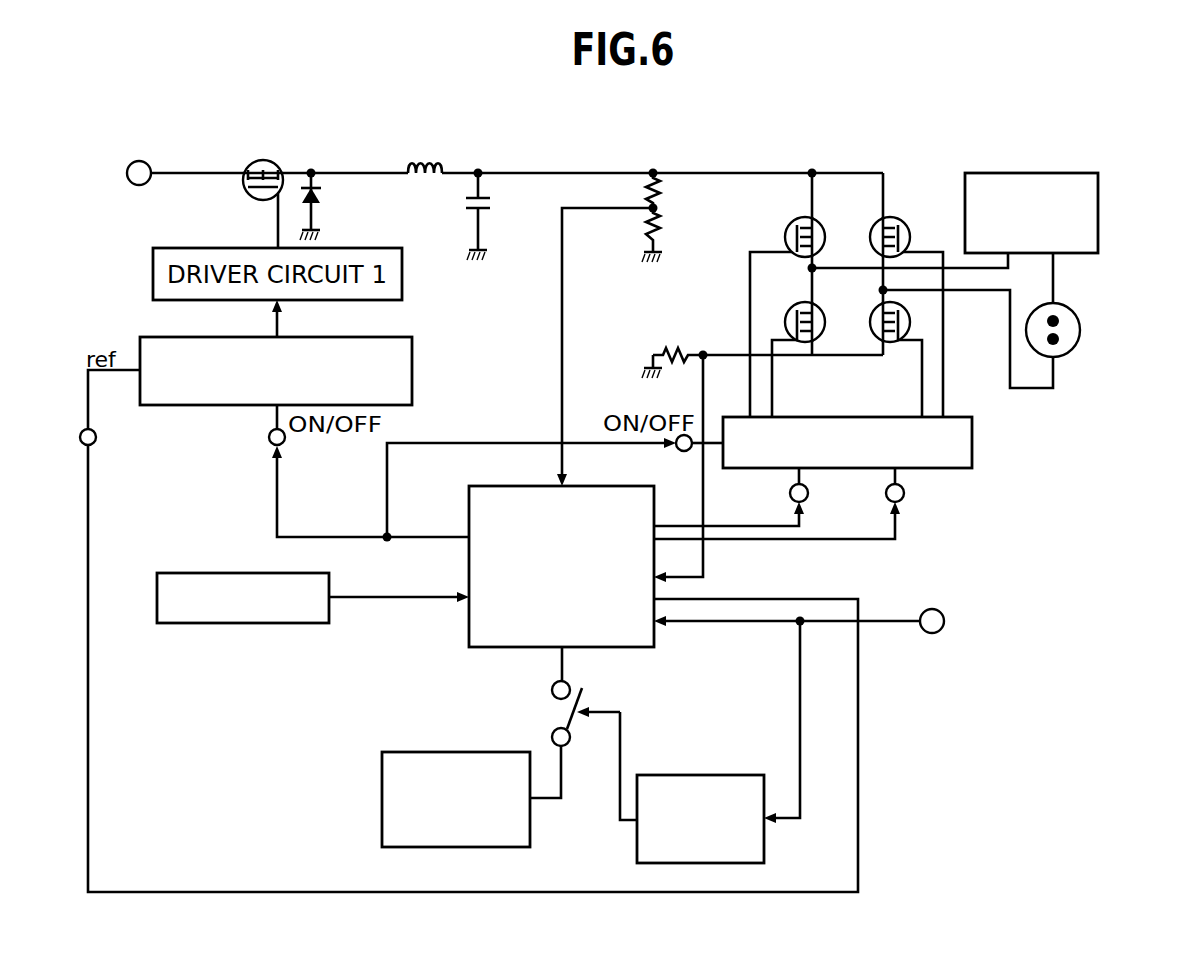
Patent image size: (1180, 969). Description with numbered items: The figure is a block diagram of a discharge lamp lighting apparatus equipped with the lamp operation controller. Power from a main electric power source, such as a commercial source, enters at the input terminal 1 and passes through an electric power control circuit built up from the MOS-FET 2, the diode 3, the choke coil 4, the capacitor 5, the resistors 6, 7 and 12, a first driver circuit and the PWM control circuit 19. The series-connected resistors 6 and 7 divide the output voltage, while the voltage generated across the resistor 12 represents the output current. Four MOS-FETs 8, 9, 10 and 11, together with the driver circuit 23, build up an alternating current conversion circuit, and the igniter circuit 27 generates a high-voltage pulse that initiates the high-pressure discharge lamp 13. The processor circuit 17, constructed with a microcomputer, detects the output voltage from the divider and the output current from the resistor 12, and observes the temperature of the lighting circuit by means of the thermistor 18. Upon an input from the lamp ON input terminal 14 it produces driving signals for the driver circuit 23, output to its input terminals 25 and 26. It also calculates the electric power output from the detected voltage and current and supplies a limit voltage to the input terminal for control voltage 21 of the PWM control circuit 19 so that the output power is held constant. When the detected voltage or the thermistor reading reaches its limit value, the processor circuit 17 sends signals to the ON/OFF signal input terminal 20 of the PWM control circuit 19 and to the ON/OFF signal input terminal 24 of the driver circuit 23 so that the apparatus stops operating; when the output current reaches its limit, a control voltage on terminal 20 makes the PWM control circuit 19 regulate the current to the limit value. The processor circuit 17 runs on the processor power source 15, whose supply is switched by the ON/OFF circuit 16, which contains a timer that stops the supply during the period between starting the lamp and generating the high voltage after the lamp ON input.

The input terminal 1 is at (147, 163).
The MOS-FET 2 is at (272, 163).
The diode 3 is at (321, 189).
The choke coil 4 is at (440, 163).
The capacitor 5 is at (470, 200).
The resistor 6 is at (660, 185).
The resistor 7 is at (660, 228).
The MOS-FET 8 is at (790, 226).
The MOS-FET 9 is at (790, 311).
The MOS-FET 10 is at (905, 224).
The MOS-FET 11 is at (874, 312).
The resistor 12 is at (663, 351).
The discharge lamp 13 is at (1075, 309).
The lamp ON input terminal 14 is at (940, 610).
The power source for processor circuit 15 is at (398, 752).
The ON/OFF circuit 16 is at (717, 775).
The processor circuit 17 is at (503, 647).
The thermistor 18 is at (240, 623).
The PWM control circuit 19 is at (412, 355).
The input terminal for ON/OFF signal 20 is at (285, 443).
The input terminal for control voltage 21 is at (95, 443).
The driver circuit 23 is at (972, 443).
The input terminal for ON/OFF signal 24 is at (678, 448).
The input terminal 25 is at (790, 493).
The input terminal 26 is at (904, 497).
The igniter circuit 27 is at (992, 173).